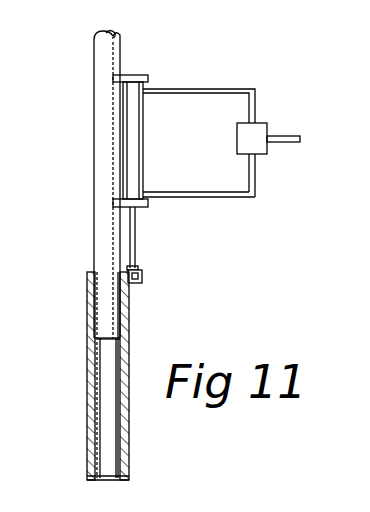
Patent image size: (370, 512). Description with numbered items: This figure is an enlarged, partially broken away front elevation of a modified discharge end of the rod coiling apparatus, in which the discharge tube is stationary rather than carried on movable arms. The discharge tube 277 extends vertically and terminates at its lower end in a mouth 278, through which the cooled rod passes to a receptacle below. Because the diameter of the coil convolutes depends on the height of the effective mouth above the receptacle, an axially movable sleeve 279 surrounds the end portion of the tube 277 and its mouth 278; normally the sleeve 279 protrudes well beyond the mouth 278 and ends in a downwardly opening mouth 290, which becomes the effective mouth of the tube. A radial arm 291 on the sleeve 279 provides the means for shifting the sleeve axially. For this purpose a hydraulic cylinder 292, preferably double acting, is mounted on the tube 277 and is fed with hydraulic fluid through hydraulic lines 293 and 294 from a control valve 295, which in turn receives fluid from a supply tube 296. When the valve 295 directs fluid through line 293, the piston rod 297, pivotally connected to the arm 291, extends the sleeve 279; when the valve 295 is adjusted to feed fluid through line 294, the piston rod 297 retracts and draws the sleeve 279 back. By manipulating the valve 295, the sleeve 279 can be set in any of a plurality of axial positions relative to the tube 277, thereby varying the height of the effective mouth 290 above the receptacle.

The discharge tube 277 is at (118, 58).
The mouth 278 is at (93, 347).
The axially movable sleeve 279 is at (129, 350).
The downwardly opening mouth 290 is at (100, 482).
The radial arm 291 is at (142, 278).
The hydraulic cylinder 292 is at (145, 144).
The hydraulic line 293 is at (222, 80).
The hydraulic line 294 is at (210, 178).
The control valve 295 is at (282, 118).
The supply tube 296 is at (281, 144).
The piston rod 297 is at (137, 252).